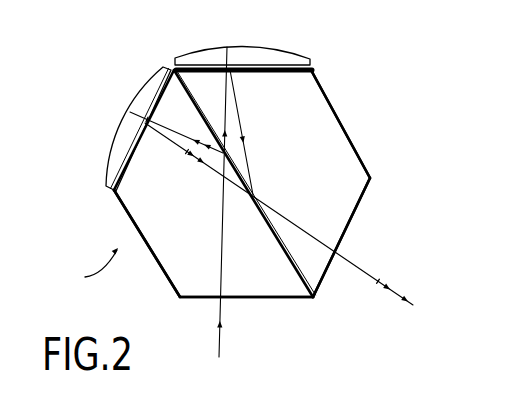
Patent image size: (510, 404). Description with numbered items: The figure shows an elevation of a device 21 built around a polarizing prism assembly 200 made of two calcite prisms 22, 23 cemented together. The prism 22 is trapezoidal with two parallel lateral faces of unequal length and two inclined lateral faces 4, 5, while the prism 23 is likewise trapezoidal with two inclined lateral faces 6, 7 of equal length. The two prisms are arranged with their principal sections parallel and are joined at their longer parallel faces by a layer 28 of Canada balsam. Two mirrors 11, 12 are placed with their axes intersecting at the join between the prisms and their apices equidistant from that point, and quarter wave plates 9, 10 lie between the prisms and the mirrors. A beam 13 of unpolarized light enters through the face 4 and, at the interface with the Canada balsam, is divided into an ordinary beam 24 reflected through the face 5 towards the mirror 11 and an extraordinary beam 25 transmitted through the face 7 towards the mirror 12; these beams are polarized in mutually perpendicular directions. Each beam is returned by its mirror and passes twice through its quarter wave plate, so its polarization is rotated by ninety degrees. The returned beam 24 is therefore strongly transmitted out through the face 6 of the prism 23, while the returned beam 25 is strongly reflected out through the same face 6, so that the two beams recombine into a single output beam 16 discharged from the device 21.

The polarizing prism assembly 200 is at (270, 258).
The inclined lateral face 4 is at (288, 298).
The inclined lateral face 6 is at (361, 197).
The calcite prism 23 is at (332, 118).
The calcite prism 22 is at (171, 269).
The layer of Canada balsam 28 is at (314, 298).
The quarter wave plate 10 is at (312, 70).
The quarter wave plate 9 is at (114, 191).
The inclined lateral face 7 is at (289, 73).
The mirror 12 is at (205, 53).
The mirror 11 is at (150, 90).
The inclined lateral face 5 is at (127, 173).
The beam of unpolarized light 13 is at (227, 202).
The extraordinary beam 25 is at (227, 92).
The ordinary beam 24 is at (175, 131).
The output beam 16 is at (283, 227).
The device 21 is at (93, 268).